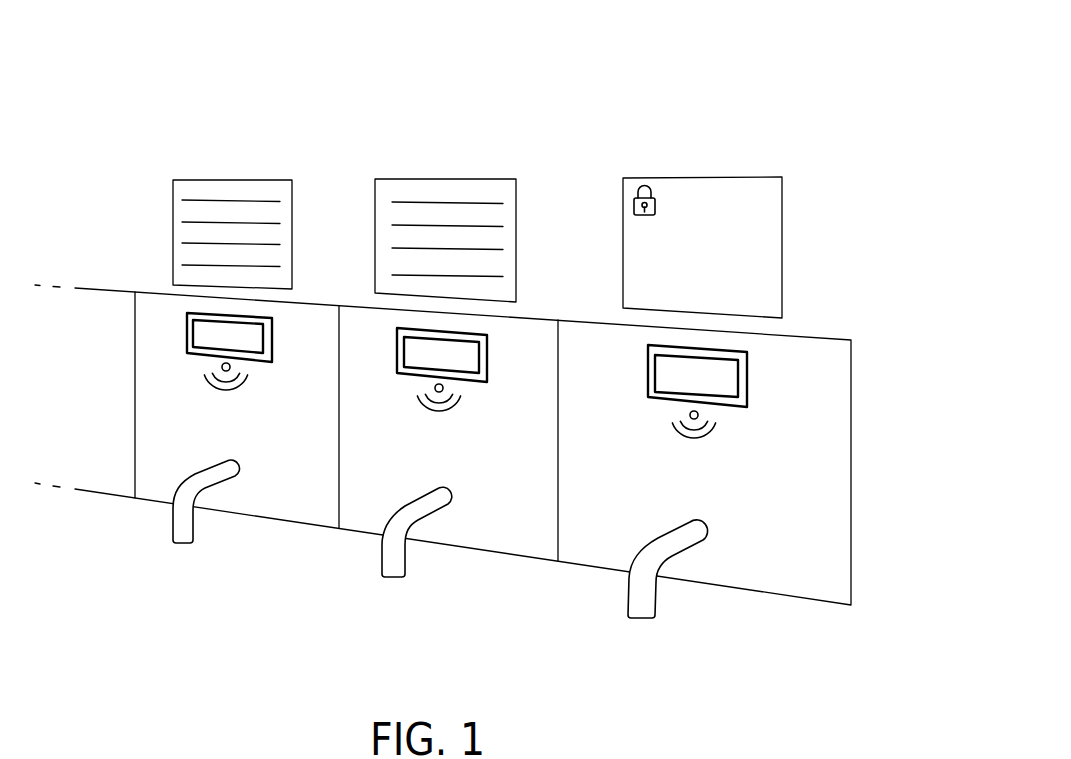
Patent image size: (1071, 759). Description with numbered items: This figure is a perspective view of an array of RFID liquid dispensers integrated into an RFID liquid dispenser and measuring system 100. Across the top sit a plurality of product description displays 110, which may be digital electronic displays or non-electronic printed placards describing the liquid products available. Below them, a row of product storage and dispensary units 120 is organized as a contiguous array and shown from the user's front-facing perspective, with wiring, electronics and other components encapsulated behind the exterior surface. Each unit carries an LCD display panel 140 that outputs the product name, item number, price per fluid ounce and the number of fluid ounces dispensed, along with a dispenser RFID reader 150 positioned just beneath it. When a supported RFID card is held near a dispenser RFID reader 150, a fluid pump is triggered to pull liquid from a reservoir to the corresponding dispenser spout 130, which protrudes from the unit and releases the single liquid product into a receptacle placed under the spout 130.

The RFID liquid dispenser and measuring system 100 is at (185, 82).
The product description display 110 is at (292, 223).
The product storage and dispensary unit 120 is at (872, 560).
The dispenser spout 130 is at (170, 523).
The LCD display panel 140 is at (272, 341).
The dispenser RFID reader 150 is at (240, 388).